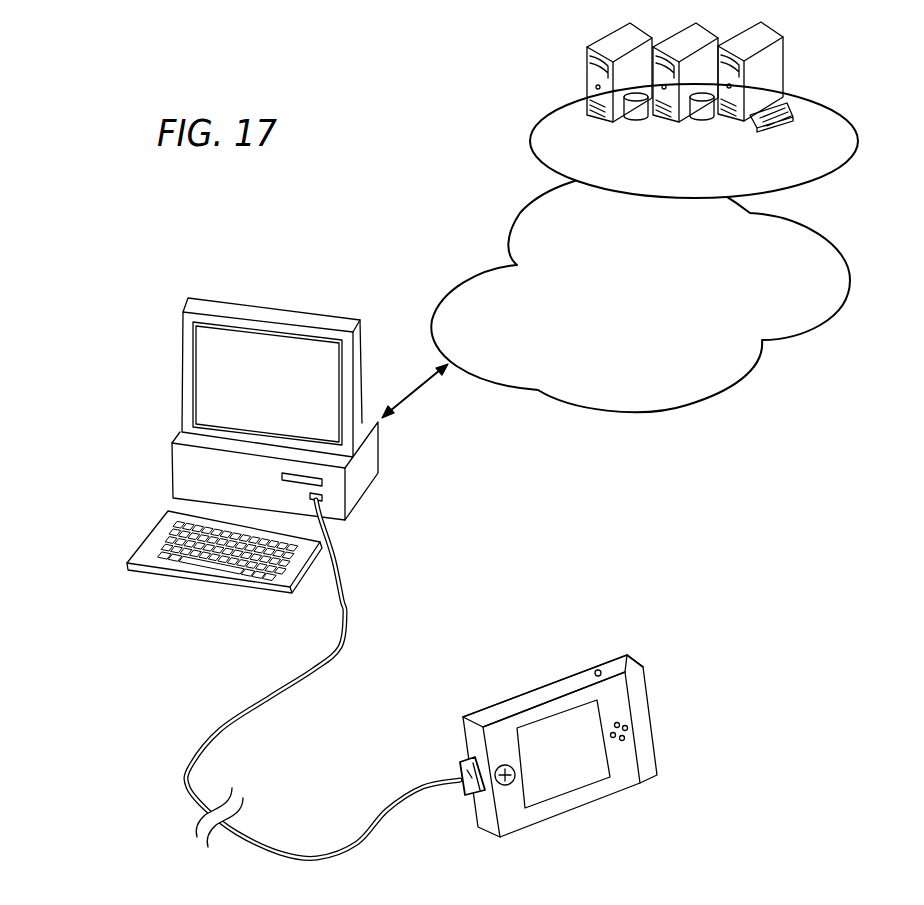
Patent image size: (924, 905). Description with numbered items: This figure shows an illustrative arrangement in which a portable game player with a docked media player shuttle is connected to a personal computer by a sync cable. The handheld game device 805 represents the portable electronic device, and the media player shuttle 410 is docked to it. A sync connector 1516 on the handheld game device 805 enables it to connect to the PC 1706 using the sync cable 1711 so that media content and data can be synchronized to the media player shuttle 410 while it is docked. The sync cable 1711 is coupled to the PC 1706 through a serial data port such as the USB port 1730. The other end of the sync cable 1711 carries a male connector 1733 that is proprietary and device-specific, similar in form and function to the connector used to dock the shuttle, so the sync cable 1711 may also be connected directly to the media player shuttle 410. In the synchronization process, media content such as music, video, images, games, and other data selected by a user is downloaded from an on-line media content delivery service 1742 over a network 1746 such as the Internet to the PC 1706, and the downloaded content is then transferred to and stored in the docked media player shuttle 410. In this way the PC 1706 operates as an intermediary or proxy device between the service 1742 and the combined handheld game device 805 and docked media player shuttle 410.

The media content delivery service 1742 is at (530, 134).
The network 1746 is at (467, 280).
The PC 1706 is at (378, 461).
The USB port 1730 is at (323, 497).
The sync cable 1711 is at (345, 617).
The male connector 1733 is at (460, 773).
The sync connector 1516 is at (477, 810).
The media player shuttle 410 is at (633, 658).
The handheld game device 805 is at (550, 685).